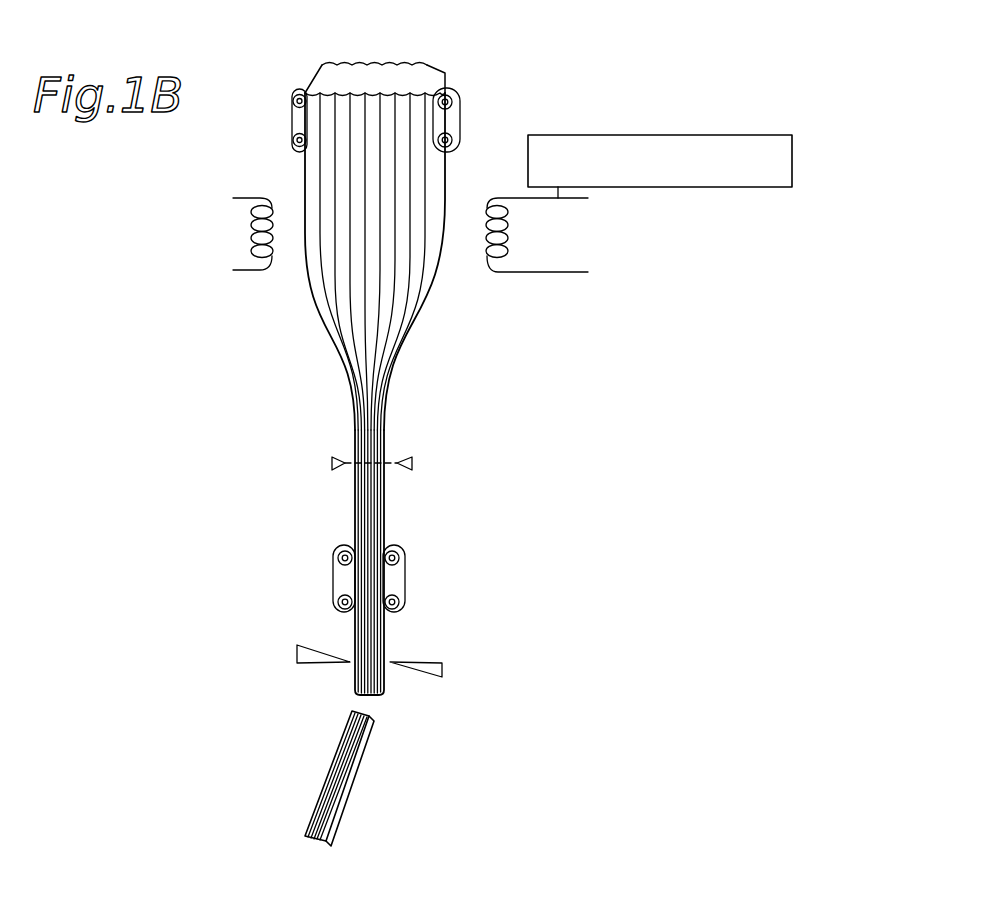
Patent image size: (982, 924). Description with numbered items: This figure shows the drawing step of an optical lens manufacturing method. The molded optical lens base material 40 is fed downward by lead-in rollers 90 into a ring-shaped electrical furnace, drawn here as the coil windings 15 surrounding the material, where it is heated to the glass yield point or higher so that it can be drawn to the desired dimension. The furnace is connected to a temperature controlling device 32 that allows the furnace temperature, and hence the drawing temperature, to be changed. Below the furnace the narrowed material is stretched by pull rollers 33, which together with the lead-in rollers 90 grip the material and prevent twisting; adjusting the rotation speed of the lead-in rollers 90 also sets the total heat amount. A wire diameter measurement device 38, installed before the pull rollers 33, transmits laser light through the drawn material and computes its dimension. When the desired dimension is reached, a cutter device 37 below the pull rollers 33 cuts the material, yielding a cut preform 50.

The optical lens base material 40 is at (462, 53).
The lead-in rollers 90 is at (468, 113).
The temperature controlling device 32 is at (633, 135).
The heating coil 15 is at (545, 273).
The wire diameter measurement device 38 is at (412, 462).
The pull rollers 33 is at (405, 577).
The cutter device 37 is at (442, 676).
The cut preform 50 is at (353, 780).